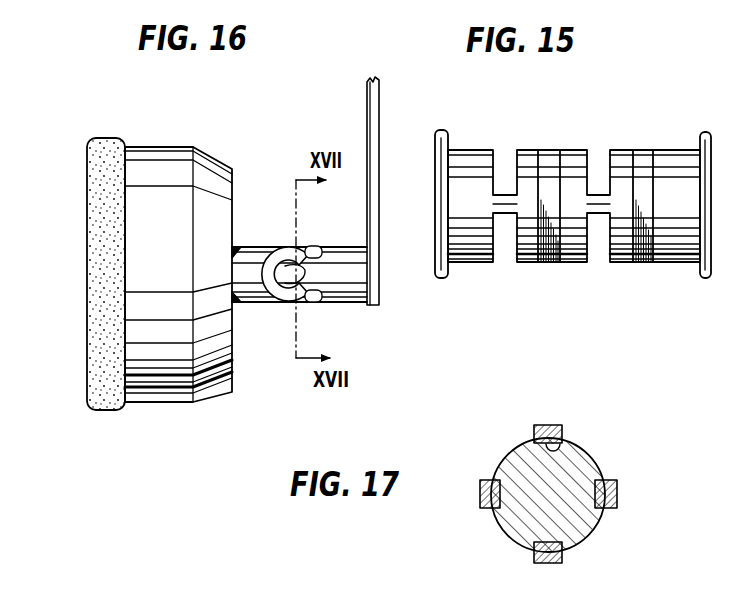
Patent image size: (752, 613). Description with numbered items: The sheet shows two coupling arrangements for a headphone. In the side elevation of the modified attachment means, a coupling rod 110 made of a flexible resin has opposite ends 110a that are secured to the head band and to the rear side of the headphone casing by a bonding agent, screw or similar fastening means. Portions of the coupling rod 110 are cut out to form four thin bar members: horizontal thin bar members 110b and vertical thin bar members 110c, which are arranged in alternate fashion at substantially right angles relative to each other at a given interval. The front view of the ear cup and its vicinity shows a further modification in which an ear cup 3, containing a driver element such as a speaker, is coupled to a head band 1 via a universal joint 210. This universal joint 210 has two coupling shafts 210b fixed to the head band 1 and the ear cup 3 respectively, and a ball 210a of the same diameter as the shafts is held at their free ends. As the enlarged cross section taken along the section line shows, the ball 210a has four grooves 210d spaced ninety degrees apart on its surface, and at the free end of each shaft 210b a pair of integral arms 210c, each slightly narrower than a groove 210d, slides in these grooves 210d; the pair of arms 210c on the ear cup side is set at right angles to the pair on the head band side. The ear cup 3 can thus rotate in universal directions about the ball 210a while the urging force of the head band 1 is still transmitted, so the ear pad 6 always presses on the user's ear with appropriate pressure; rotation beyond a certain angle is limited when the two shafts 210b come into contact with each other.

In FIG. 16, the head band 1 is at (368, 101).
In FIG. 16, the ear cup 3 is at (181, 148).
In FIG. 16, the ear pad 6 is at (104, 140).
In FIG. 16, the universal joint 210 is at (353, 307).
In FIG. 16, the ball 210a is at (291, 306).
In FIG. 17, the ball 210a is at (517, 455).
In FIG. 16, the coupling shafts 210b is at (258, 250).
In FIG. 16, the arms 210c is at (302, 282).
In FIG. 17, the arms 210c is at (562, 430).
In FIG. 16, the grooves 210d is at (278, 292).
In FIG. 17, the grooves 210d is at (559, 452).
In FIG. 15, the coupling rod 110 is at (524, 147).
In FIG. 15, the opposite ends 110a is at (442, 280).
In FIG. 15, the horizontal thin bar members 110b is at (596, 213).
In FIG. 15, the vertical thin bar members 110c is at (553, 152).